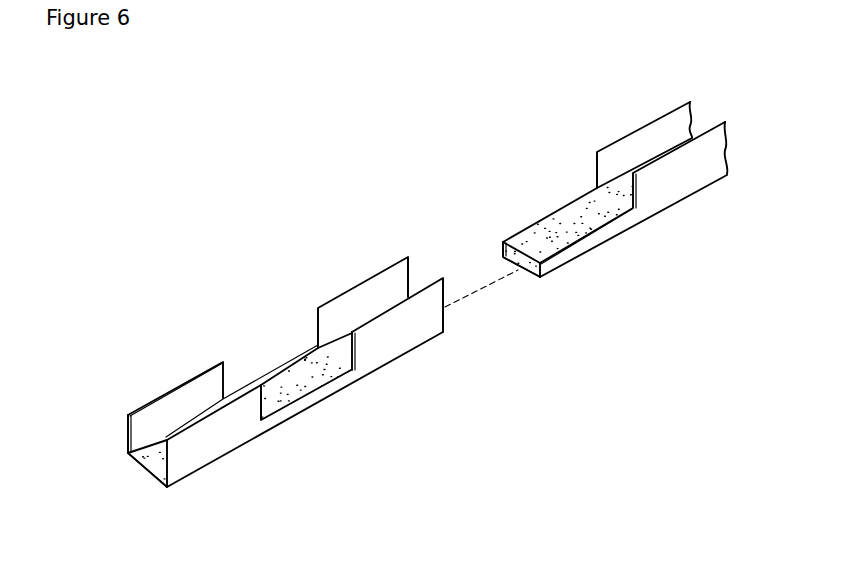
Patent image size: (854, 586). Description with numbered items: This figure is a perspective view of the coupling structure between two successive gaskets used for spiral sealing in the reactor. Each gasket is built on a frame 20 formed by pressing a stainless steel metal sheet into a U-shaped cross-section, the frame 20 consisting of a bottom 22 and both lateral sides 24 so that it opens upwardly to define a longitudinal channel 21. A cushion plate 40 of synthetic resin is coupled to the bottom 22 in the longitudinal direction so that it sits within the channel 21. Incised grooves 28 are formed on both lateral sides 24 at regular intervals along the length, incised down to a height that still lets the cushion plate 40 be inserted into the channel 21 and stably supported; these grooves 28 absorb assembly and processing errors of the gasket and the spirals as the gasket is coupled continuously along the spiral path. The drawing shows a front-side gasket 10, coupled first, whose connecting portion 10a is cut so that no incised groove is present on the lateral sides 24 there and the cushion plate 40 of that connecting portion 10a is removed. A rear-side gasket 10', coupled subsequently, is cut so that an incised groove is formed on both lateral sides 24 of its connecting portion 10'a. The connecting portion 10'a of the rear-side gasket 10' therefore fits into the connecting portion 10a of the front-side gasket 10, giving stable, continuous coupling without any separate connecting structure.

The gasket 10 is at (323, 372).
The rear-side gasket 10' is at (615, 164).
The connecting portion 10a is at (401, 245).
The connecting portion 10'a is at (593, 224).
The frame 20 is at (23, 488).
The channel 21 is at (176, 411).
The bottom 22 is at (148, 482).
The lateral sides 24 is at (58, 475).
The incised grooves 28 is at (267, 370).
The cushion plate 40 is at (152, 448).